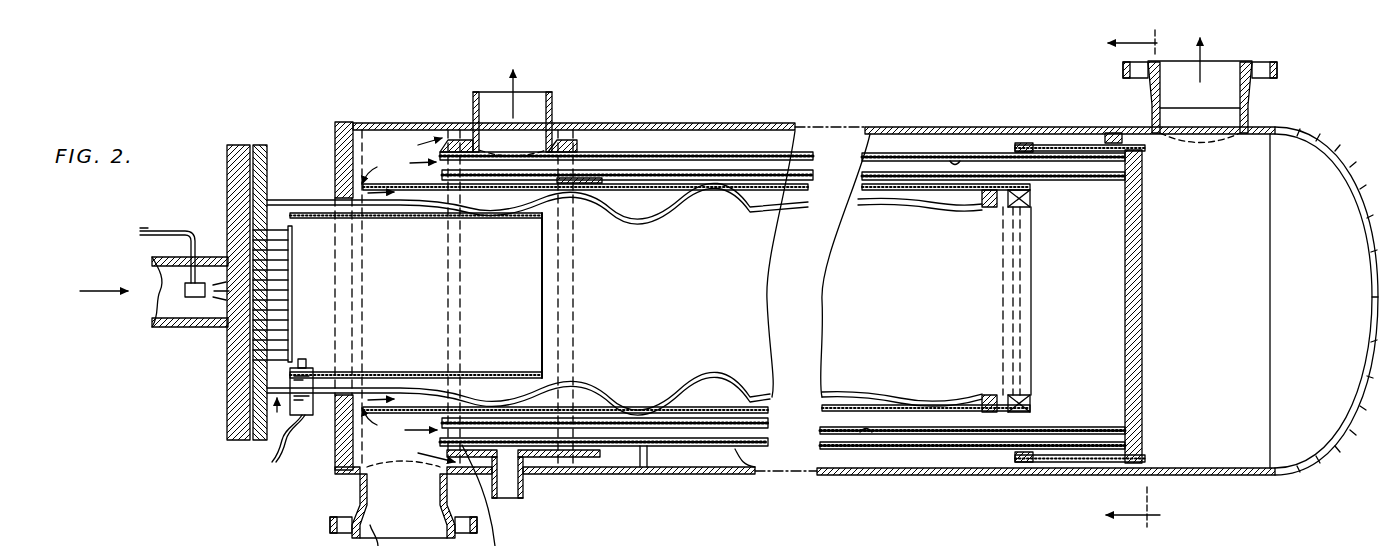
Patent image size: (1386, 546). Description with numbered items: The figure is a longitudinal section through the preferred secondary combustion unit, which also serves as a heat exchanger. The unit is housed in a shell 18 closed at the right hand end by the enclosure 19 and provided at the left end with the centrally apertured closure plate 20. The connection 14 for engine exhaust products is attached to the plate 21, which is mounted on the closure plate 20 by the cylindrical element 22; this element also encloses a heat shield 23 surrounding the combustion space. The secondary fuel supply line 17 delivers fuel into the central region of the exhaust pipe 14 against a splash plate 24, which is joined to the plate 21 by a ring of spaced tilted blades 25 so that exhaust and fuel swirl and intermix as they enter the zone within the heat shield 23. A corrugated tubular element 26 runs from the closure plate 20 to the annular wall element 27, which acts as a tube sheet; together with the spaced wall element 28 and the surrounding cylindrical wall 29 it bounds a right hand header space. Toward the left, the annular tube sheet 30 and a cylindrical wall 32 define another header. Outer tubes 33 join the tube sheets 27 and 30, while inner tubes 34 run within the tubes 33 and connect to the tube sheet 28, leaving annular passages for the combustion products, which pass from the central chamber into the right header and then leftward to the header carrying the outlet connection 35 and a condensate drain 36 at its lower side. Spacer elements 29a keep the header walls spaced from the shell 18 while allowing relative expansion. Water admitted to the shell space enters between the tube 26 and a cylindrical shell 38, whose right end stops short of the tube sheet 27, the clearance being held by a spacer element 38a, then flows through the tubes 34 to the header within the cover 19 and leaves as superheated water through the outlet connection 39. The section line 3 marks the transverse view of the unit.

The section line 3- 3 is at (1143, 281).
The connection for exhaust products 14 is at (170, 328).
The secondary fuel supply line 17 is at (170, 231).
The shell 18 is at (640, 125).
The enclosure 19 is at (1292, 478).
The closure plate 20 is at (338, 122).
The plate 21 is at (240, 202).
The cylindrical element 22 is at (293, 200).
The heat shield 23 is at (266, 385).
The splash plate 24 is at (300, 250).
The tilted blades 25 is at (268, 325).
The corrugated tubular element 26 is at (648, 440).
The wall element 27 is at (1010, 440).
The wall element 28 is at (1138, 403).
The cylindrical wall 29 is at (1058, 465).
The spacer element 29a is at (1122, 117).
The tube sheet 30 is at (632, 412).
The cylindrical wall 32 is at (573, 457).
The tubes 33 is at (905, 153).
The tubes 34 is at (478, 150).
The outlet connection 35 is at (555, 100).
The condensate drain 36 is at (515, 480).
The cylindrical shell 38 is at (394, 182).
The spacer element 38a is at (990, 190).
The outlet connection 39 is at (1243, 98).